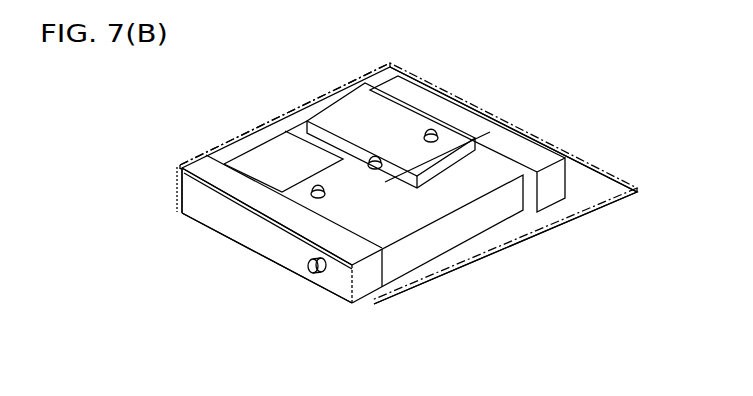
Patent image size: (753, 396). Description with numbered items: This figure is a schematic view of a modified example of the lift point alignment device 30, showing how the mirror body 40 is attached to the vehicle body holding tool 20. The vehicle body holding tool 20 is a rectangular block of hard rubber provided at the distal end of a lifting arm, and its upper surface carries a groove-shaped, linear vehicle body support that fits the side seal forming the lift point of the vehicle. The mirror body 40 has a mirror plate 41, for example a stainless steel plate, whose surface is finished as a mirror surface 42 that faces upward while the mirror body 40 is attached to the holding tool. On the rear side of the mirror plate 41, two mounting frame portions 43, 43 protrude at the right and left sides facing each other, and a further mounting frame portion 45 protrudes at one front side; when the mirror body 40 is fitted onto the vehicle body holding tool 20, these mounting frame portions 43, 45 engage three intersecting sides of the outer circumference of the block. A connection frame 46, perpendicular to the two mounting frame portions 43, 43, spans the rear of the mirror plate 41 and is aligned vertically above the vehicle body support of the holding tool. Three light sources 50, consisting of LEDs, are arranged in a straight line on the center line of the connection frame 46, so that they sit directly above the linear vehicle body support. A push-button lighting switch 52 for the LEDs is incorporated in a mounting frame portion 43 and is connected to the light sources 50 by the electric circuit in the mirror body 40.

The vehicle body holding tool 20 is at (264, 154).
The lift point alignment device 30 is at (495, 106).
The mirror body 40 is at (228, 242).
The mirror plate 41 is at (550, 237).
The mirror surface 42 is at (550, 218).
The mounting frame portion 43 is at (270, 245).
The mounting frame portion 45 is at (312, 99).
The connection frame 46 is at (443, 150).
The light sources 50 is at (434, 130).
The lighting switch 52 is at (305, 276).